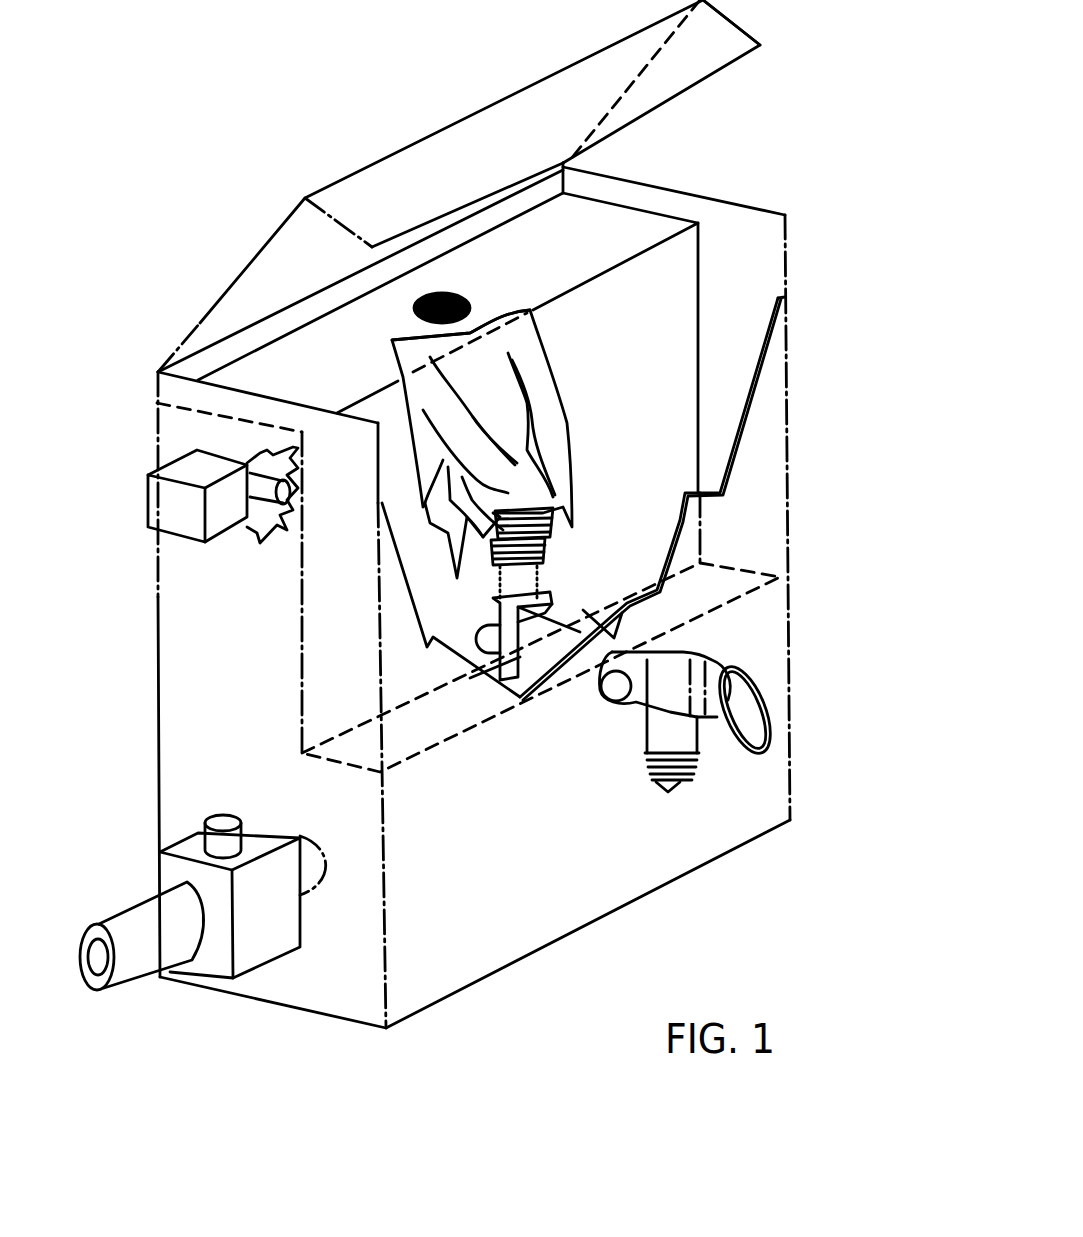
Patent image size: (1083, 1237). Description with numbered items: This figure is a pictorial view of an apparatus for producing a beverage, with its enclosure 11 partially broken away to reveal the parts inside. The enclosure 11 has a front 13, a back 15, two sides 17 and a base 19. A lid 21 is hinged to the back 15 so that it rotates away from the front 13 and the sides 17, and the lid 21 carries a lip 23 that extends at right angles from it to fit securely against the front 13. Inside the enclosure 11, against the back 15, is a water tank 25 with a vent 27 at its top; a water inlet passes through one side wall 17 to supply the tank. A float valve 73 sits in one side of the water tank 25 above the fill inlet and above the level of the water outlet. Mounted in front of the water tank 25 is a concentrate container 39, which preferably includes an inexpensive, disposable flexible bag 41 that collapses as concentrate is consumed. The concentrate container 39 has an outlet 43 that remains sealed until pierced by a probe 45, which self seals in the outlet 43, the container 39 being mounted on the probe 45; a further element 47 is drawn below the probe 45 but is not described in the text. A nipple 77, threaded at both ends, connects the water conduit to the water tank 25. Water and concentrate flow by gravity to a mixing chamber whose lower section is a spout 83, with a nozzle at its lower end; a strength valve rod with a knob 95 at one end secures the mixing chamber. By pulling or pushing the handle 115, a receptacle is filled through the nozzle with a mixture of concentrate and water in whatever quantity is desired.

The enclosure 11 is at (790, 418).
The front 13 is at (775, 782).
The back 15 is at (158, 605).
The sides 17 is at (250, 645).
The base 19 is at (633, 895).
The lid 21 is at (257, 260).
The lip 23 is at (545, 140).
The water tank 25 is at (352, 374).
The vent 27 is at (447, 290).
The concentrate container 39 is at (562, 427).
The flexible bag 41 is at (537, 357).
The outlet 43 is at (542, 540).
The probe 45 is at (530, 579).
The valve 47 is at (503, 613).
The float valve 73 is at (160, 507).
The nipple 77 is at (515, 633).
The spout 83 is at (647, 745).
The knob 95 is at (615, 693).
The handle 115 is at (748, 700).